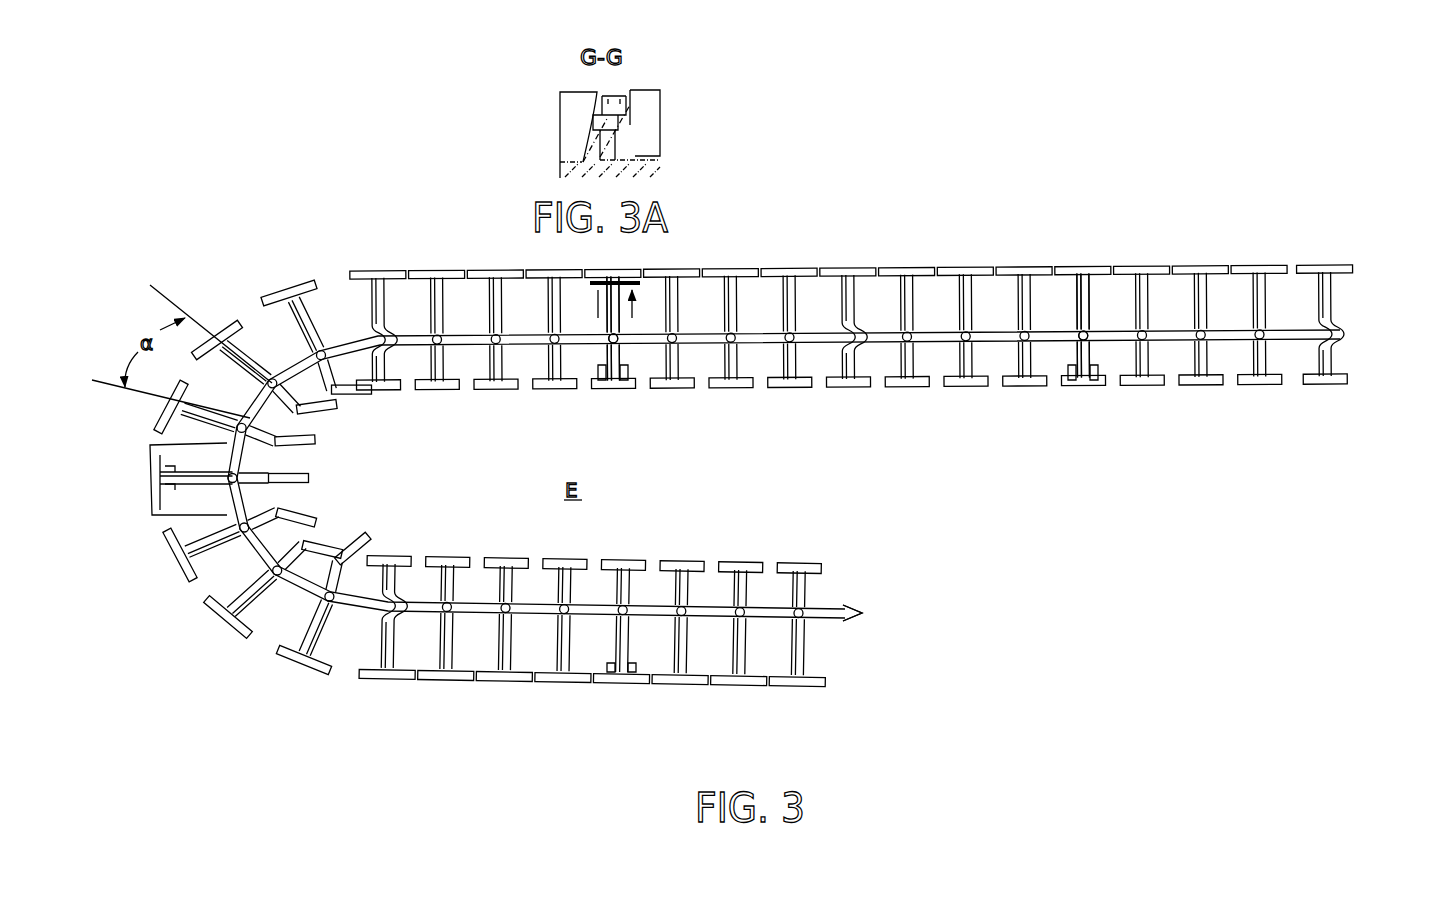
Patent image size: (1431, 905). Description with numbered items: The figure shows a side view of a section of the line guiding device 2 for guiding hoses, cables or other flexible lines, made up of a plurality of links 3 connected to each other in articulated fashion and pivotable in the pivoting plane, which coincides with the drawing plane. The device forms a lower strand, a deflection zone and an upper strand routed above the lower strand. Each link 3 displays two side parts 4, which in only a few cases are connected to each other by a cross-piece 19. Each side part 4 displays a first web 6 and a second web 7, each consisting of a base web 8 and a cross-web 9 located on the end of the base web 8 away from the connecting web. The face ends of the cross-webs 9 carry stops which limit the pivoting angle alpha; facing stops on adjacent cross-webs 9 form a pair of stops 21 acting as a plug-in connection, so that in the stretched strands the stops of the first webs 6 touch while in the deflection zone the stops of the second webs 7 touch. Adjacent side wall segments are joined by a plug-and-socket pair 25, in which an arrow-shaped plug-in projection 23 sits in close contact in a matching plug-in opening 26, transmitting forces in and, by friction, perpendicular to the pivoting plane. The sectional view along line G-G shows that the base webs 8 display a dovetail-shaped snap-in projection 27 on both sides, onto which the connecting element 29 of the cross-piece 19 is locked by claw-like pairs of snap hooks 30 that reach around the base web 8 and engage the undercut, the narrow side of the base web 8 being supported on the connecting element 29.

In FIG. 3, the line guiding device 2 is at (275, 245).
In FIG. 3, the links 3 is at (1070, 267).
In FIG. 3, the side parts 4 is at (957, 383).
In FIG. 3, the first web 6 is at (1317, 287).
In FIG. 3, the second web 7 is at (1307, 380).
In FIG. 3A, the base web 8 is at (622, 150).
In FIG. 3A, the cross-web 9 is at (565, 142).
In FIG. 3, the cross-piece 19 is at (198, 462).
In FIG. 3, the pair of stops 21 is at (322, 548).
In FIG. 3, the plug-in projection 23 is at (862, 610).
In FIG. 3, the plug-and-socket pair 25 is at (380, 340).
In FIG. 3, the plug-in opening 26 is at (1336, 340).
In FIG. 3A, the snap-in projection 27 is at (596, 122).
In FIG. 3A, the connecting element 29 is at (656, 170).
In FIG. 3A, the snap hooks 30 is at (616, 104).
In FIG. 3, the snap hooks 30 is at (1077, 368).